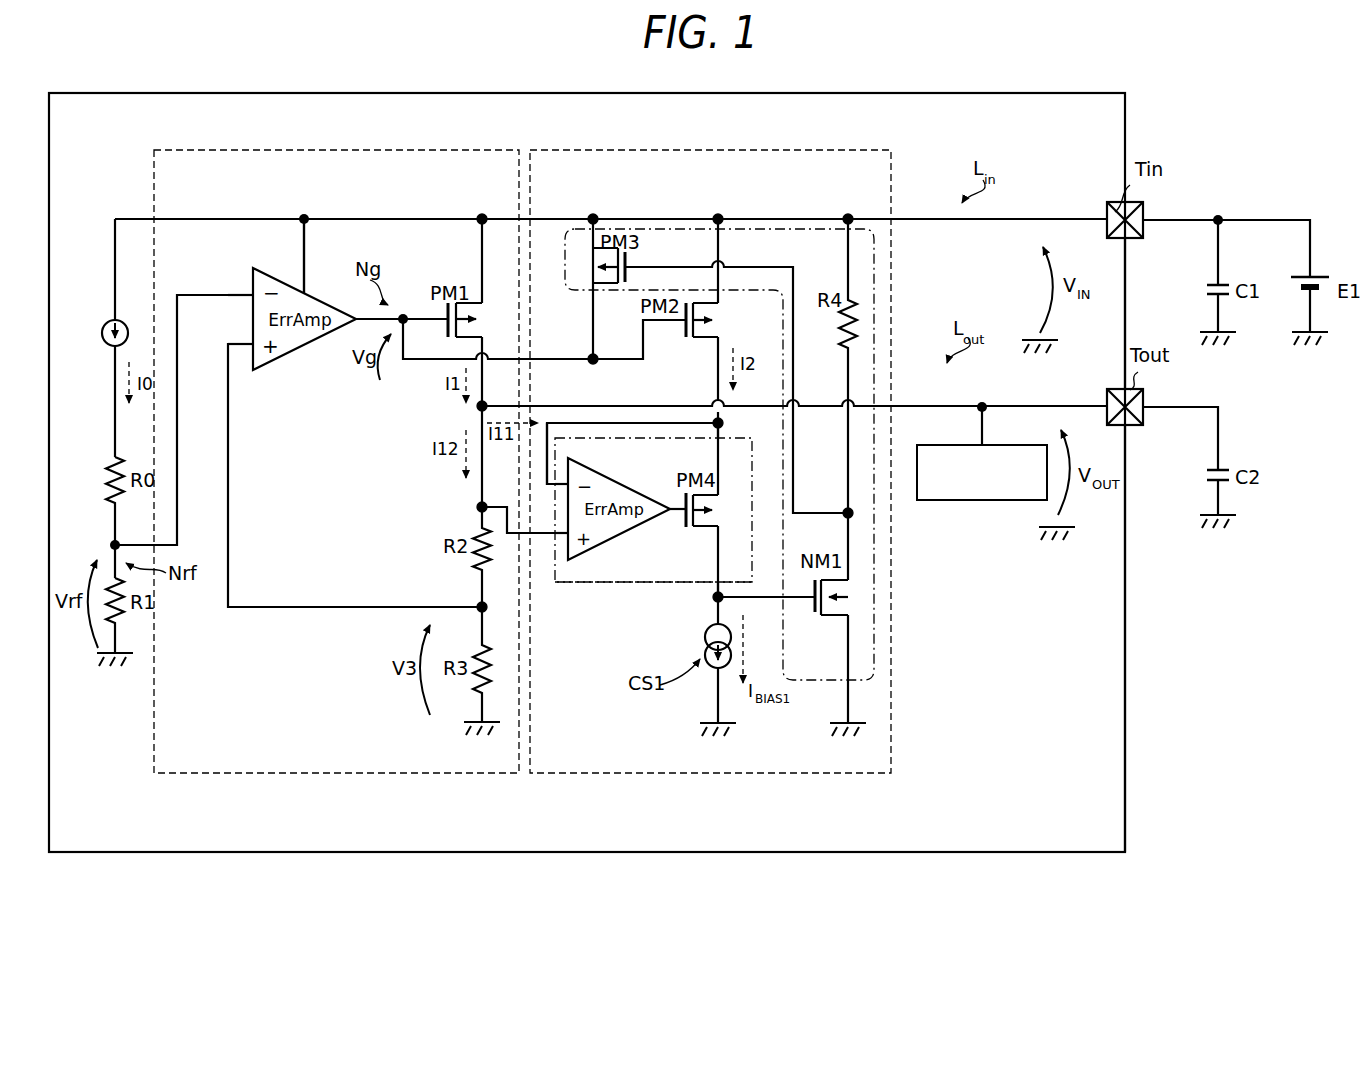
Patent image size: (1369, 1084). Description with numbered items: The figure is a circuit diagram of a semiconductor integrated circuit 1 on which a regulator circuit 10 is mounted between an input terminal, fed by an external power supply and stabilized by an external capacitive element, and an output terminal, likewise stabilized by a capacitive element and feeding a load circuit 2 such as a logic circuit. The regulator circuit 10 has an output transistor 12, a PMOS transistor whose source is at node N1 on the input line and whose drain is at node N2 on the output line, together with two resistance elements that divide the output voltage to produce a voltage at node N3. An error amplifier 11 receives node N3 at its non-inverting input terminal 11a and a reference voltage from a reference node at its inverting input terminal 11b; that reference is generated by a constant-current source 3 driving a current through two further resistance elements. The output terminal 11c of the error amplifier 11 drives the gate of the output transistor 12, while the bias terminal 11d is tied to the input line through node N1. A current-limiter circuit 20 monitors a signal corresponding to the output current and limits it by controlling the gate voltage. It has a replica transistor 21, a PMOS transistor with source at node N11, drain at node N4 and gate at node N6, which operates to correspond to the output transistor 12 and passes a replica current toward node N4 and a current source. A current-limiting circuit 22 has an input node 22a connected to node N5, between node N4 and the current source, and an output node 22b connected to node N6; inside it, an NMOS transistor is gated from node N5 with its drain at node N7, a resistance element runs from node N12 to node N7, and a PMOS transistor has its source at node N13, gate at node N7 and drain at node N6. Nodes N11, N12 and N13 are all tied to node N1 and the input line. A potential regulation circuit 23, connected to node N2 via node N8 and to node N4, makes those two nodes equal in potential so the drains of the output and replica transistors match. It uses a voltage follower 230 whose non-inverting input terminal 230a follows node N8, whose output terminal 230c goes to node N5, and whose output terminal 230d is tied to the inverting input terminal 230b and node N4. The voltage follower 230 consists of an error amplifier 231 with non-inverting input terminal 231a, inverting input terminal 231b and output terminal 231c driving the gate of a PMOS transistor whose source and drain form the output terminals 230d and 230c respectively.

The semiconductor integrated circuit 1 is at (1057, 75).
The load circuit 2 is at (982, 500).
The constant-current source 3 is at (118, 320).
The regulator circuit 10 is at (481, 128).
The error amplifier 11 is at (305, 360).
The non-inverting input terminal 11a is at (246, 358).
The inverting input terminal 11b is at (248, 282).
The output terminal 11c is at (344, 313).
The bias terminal 11d is at (296, 282).
The output transistor 12 is at (444, 276).
The current-limiter circuit 20 is at (792, 128).
The replica transistor 21 is at (684, 332).
The current-limiting circuit 22 is at (878, 290).
The input node 22a is at (779, 602).
The output node 22b is at (601, 302).
The potential regulation circuit 23 is at (575, 686).
The voltage follower 230 is at (582, 593).
The non-inverting input terminal 230a is at (553, 566).
The inverting input terminal 230b is at (553, 502).
The output terminal 230c is at (710, 585).
The output terminal 230d is at (732, 426).
The error amplifier 231 is at (615, 537).
The non-inverting input terminal 231a is at (562, 545).
The inverting input terminal 231b is at (562, 490).
The output terminal 231c is at (666, 492).
The node N1 is at (480, 213).
The node N2 is at (473, 414).
The node N3 is at (490, 606).
The node N4 is at (710, 420).
The node N5 is at (709, 602).
The node N6 is at (586, 352).
The node N7 is at (844, 506).
The node N8 is at (470, 511).
The node N11 is at (721, 213).
The node N12 is at (851, 213).
The node N13 is at (602, 213).